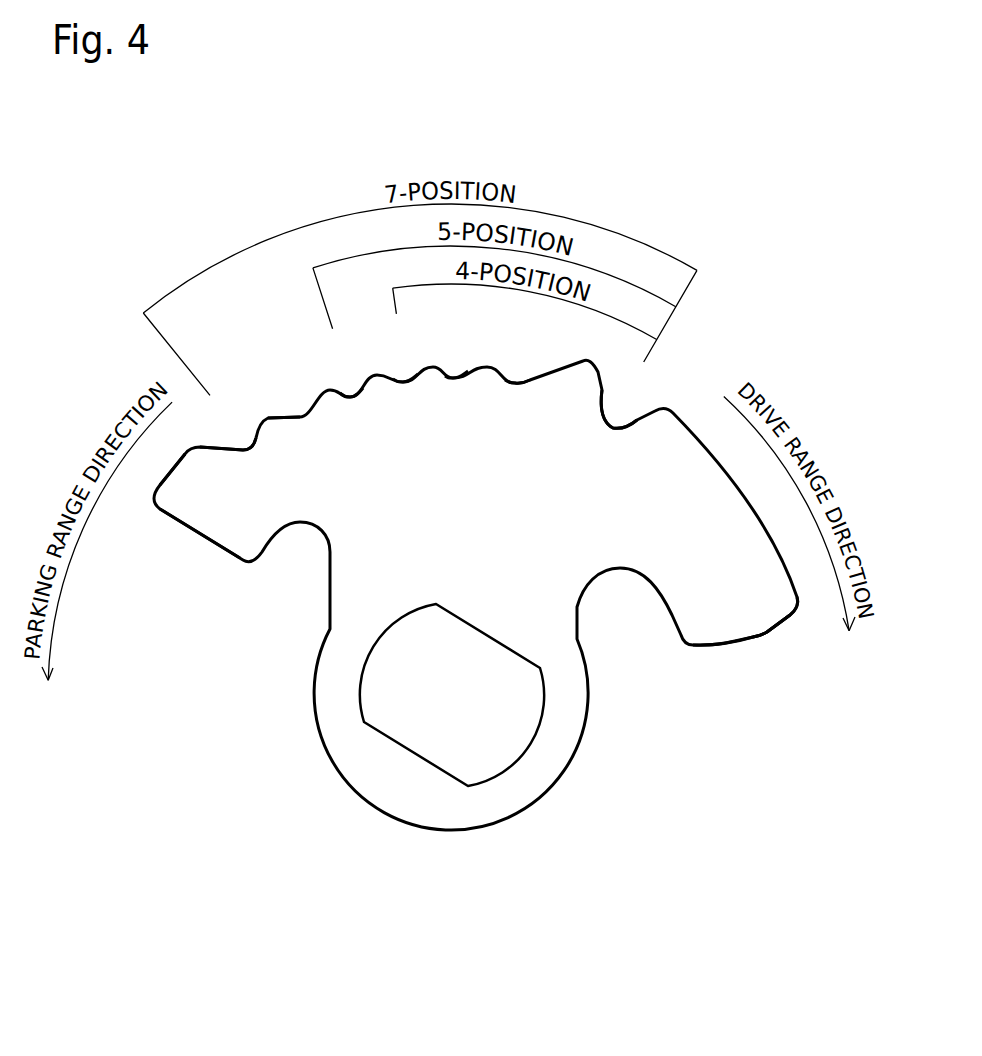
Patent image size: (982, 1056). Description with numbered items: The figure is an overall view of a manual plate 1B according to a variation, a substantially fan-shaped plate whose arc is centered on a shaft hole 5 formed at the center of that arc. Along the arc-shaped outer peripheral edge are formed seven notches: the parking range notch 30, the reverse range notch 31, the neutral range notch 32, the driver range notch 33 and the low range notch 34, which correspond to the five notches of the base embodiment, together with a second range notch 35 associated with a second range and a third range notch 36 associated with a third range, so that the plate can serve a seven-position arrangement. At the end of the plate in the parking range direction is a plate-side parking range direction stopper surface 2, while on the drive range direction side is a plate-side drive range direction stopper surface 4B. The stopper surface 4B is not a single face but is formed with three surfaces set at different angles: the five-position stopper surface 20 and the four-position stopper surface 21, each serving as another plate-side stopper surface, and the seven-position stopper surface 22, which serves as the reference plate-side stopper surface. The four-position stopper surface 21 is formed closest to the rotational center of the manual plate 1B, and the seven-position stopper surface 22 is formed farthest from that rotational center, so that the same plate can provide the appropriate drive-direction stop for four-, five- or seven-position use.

The manual plate 1B is at (703, 332).
The plate-side parking range direction stopper surface 2 is at (195, 532).
The shaft hole 5 is at (512, 750).
The 5-position stopper surface 20 is at (747, 642).
The 4-position stopper surface 21 is at (702, 647).
The 7-position stopper surface 22 is at (787, 617).
The parking range notch 30 is at (608, 422).
The reverse range notch 31 is at (517, 383).
The neutral range notch 32 is at (453, 378).
The driver range notch 33 is at (403, 382).
The low range notch 34 is at (350, 397).
The 2nd range notch 35 is at (303, 418).
The 3rd range notch 36 is at (247, 448).
The plate-side drive range direction stopper surface 4B is at (768, 637).